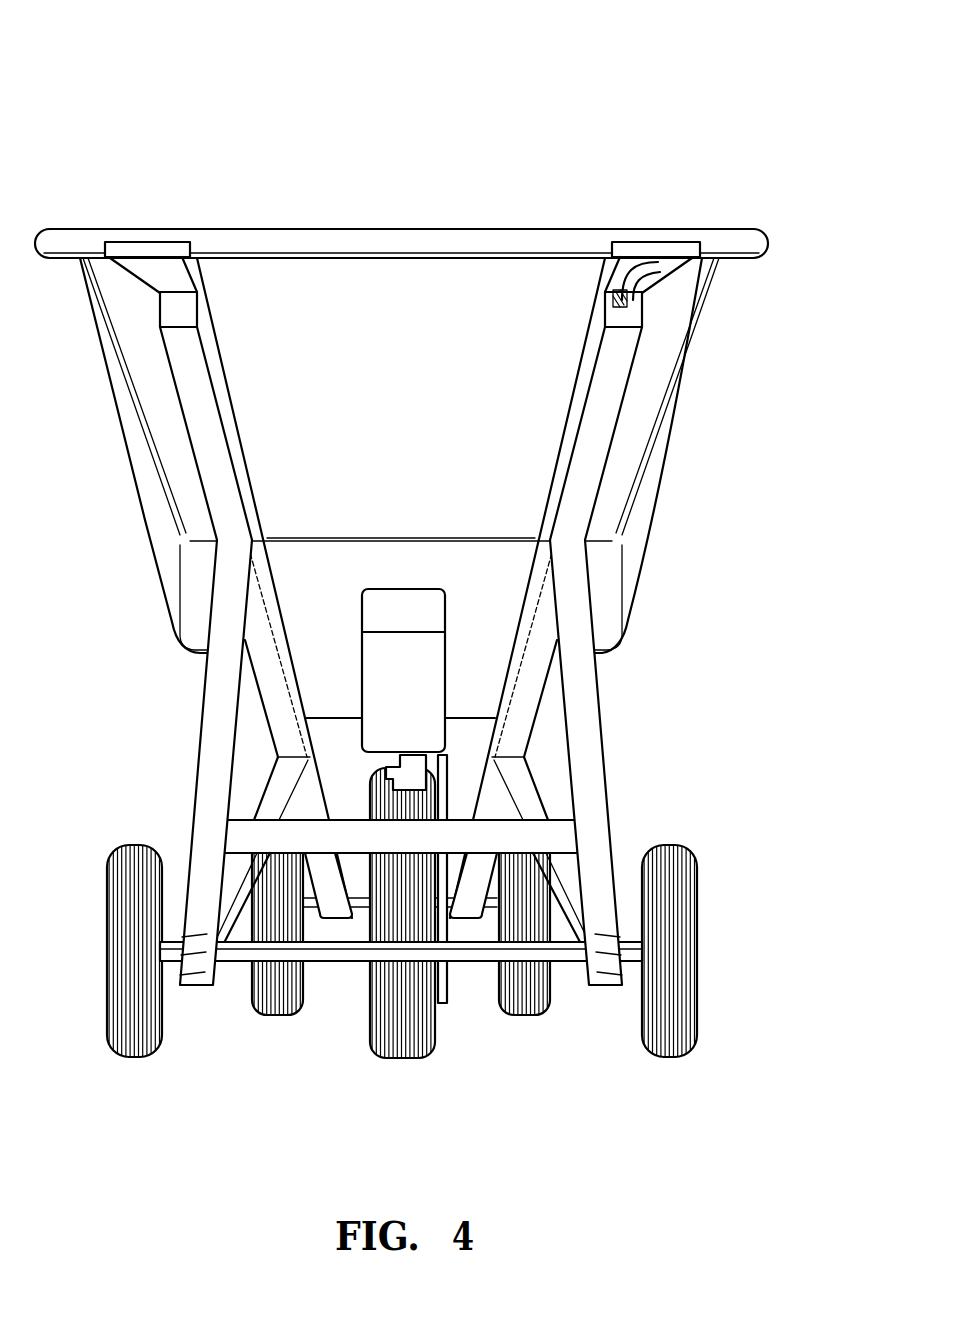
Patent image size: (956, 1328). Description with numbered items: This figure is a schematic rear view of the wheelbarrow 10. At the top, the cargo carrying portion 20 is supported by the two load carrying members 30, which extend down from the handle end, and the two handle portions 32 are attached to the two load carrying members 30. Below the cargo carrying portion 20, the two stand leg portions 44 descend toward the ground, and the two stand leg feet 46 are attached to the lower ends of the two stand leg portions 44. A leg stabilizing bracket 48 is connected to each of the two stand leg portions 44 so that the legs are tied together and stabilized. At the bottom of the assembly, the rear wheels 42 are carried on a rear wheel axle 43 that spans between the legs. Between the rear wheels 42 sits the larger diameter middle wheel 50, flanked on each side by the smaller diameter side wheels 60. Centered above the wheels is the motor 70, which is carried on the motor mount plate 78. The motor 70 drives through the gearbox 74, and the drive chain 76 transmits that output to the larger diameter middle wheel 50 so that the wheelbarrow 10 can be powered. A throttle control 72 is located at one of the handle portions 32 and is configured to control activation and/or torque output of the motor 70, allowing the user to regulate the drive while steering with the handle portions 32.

The wheelbarrow 10 is at (175, 143).
The cargo carrying portion 20 is at (655, 368).
The load carrying members 30 is at (212, 452).
The handle portions 32 is at (152, 245).
The rear wheels 42 is at (132, 1043).
The rear wheel axle 43 is at (337, 955).
The stand leg portions 44 is at (592, 725).
The stand leg feet 46 is at (197, 973).
The leg stabilizing bracket 48 is at (553, 827).
The larger diameter middle wheel 50 is at (403, 1043).
The smaller diameter side wheels 60 is at (268, 997).
The motor 70 is at (390, 612).
The throttle control 72 is at (627, 306).
The gearbox 74 is at (408, 772).
The drive chain 76 is at (447, 993).
The motor mount plate 78 is at (327, 653).